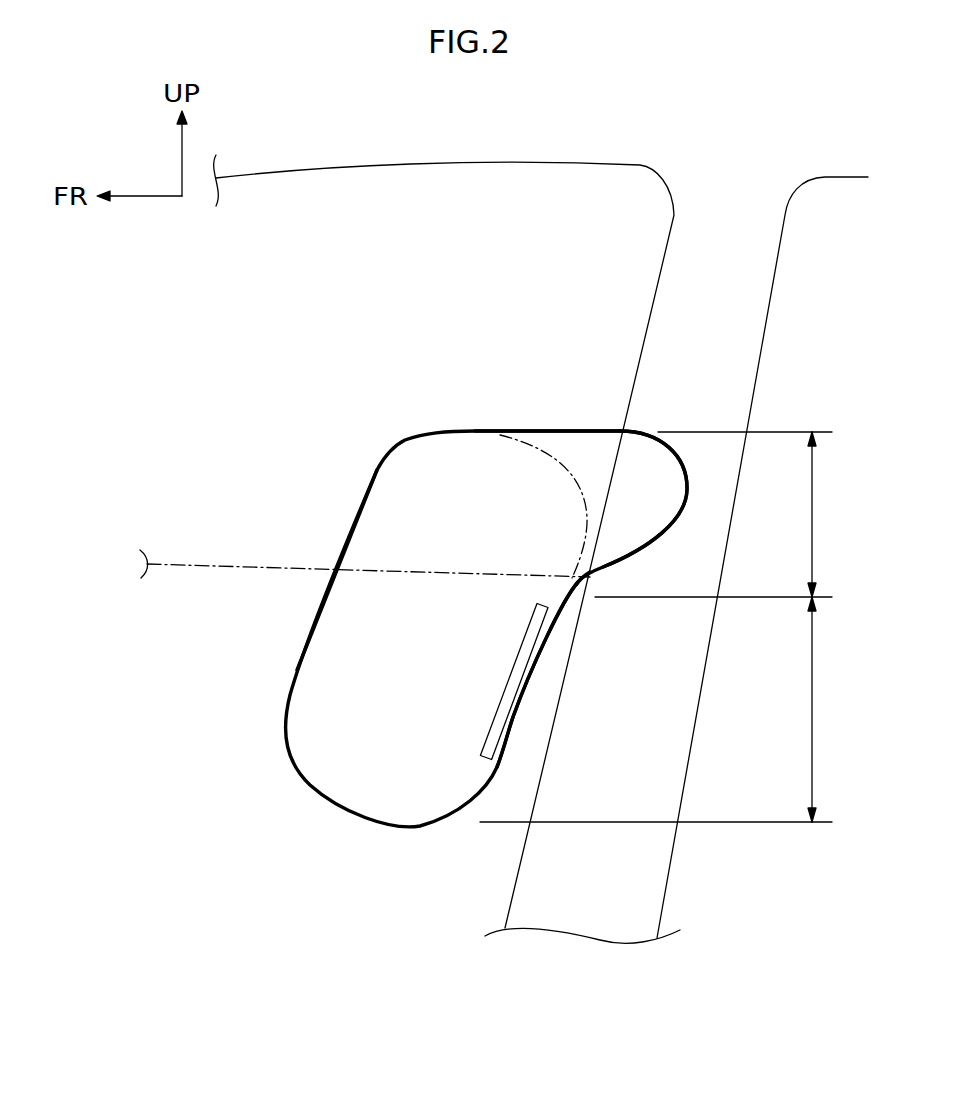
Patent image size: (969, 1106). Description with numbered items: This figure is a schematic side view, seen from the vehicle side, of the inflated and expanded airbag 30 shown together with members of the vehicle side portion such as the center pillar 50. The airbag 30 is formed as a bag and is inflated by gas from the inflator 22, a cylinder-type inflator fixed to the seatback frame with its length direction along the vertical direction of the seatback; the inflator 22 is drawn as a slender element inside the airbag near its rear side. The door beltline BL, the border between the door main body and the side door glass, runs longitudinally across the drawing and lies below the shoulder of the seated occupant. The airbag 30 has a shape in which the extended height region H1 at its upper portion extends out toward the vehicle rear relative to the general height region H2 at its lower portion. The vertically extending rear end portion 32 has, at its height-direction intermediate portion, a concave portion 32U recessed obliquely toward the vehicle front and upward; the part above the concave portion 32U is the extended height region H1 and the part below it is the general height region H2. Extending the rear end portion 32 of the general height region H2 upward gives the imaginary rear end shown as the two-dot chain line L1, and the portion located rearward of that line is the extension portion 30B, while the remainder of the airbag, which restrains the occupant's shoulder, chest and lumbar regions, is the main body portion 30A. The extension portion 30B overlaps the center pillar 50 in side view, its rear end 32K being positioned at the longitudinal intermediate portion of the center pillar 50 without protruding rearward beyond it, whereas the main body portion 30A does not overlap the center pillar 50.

The inflator 22 is at (497, 697).
The airbag 30 is at (404, 439).
The main body portion 30A is at (373, 527).
The extension portion 30B is at (583, 450).
The rear end portion 32 is at (520, 712).
The rear end 32K is at (688, 496).
The concave portion 32U is at (574, 590).
The center pillar 50 is at (656, 293).
The door beltline BL is at (167, 562).
The two-dot chain line L1 is at (568, 480).
The extended height region H1 is at (723, 514).
The general height region H2 is at (666, 709).